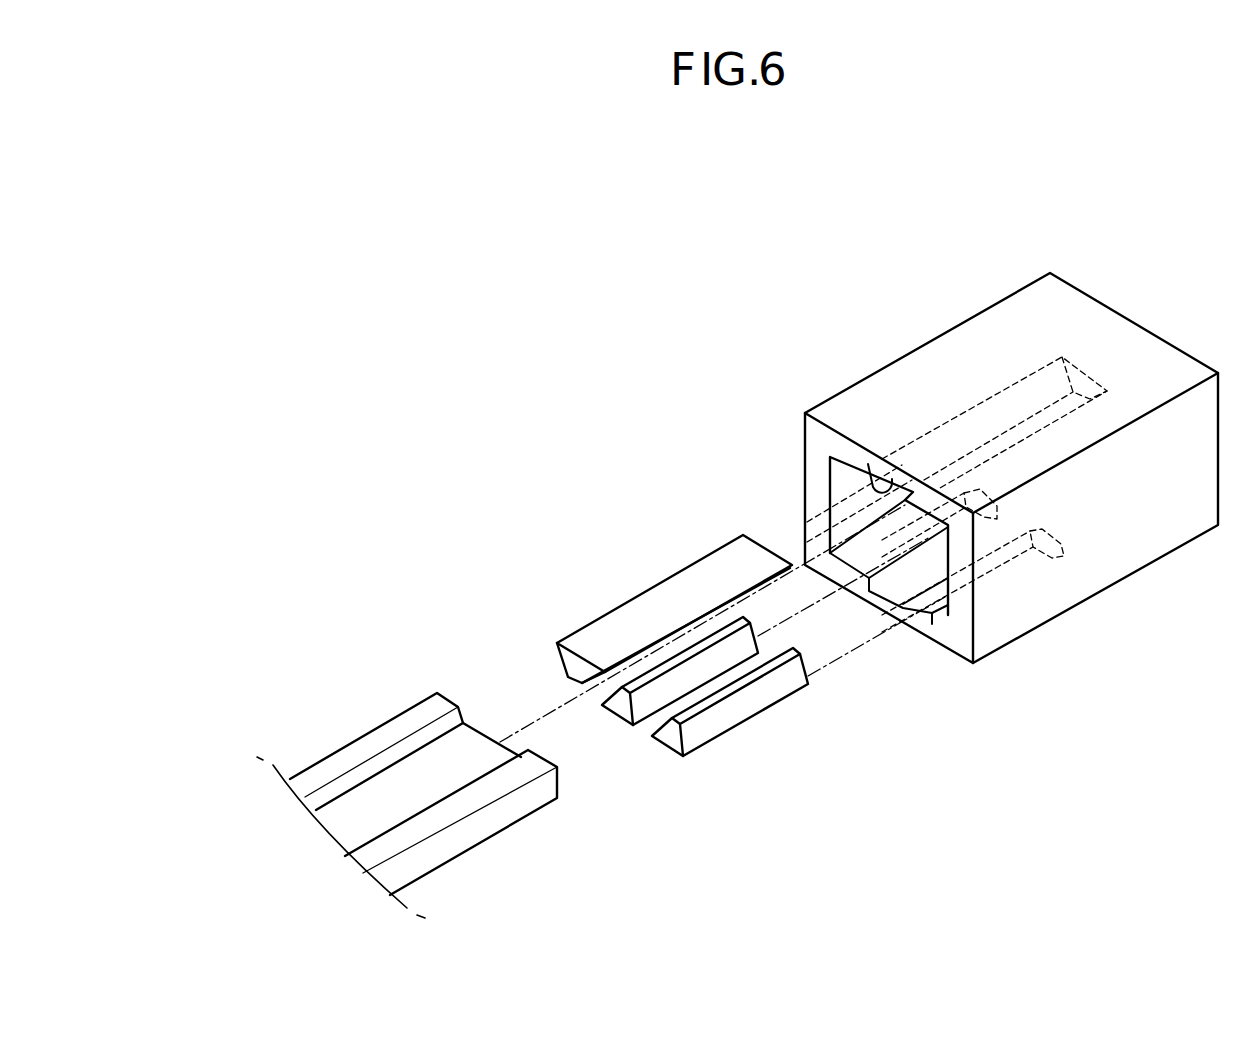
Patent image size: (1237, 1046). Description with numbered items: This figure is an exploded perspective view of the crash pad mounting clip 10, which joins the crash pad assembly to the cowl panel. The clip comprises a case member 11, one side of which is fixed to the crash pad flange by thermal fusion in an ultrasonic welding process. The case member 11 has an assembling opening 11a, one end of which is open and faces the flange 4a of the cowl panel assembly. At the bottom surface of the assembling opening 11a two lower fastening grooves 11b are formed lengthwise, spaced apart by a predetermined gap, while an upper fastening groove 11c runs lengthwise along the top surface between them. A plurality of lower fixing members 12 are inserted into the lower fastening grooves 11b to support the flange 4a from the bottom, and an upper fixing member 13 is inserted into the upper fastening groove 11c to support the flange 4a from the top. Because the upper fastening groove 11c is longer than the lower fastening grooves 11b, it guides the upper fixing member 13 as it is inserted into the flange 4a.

The flange of the cowl panel assembly 4a is at (400, 787).
The crash pad mounting clip 10 is at (937, 507).
The case member 11 is at (937, 470).
The assembling opening 11a is at (838, 489).
The lower fastening grooves 11b is at (856, 571).
The upper fastening groove 11c is at (868, 468).
The lower fixing member 12 is at (625, 708).
The upper fixing member 13 is at (615, 628).